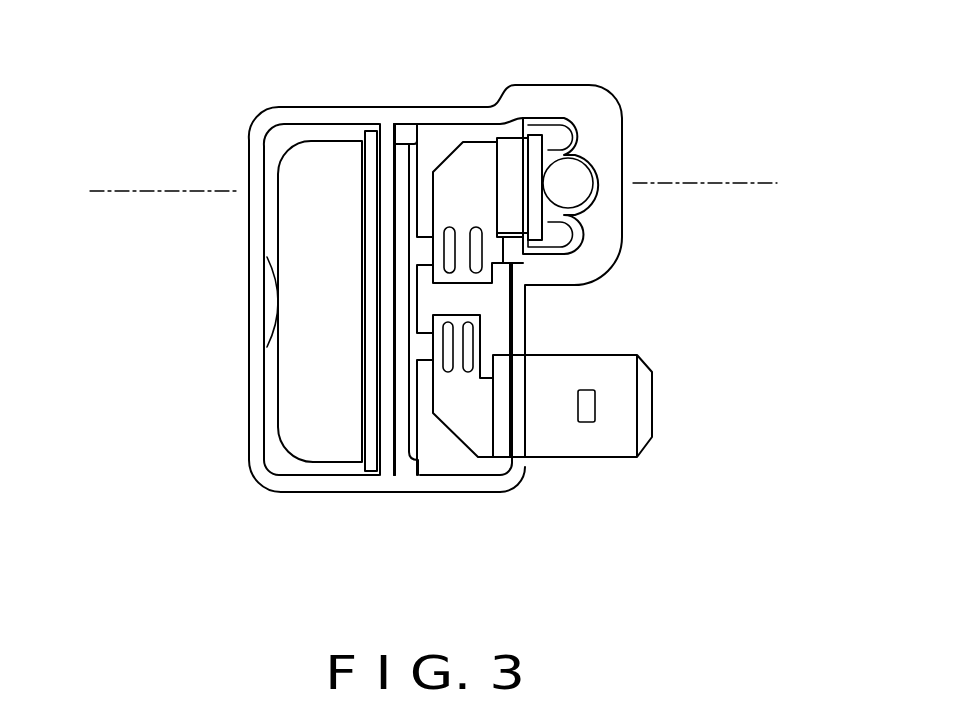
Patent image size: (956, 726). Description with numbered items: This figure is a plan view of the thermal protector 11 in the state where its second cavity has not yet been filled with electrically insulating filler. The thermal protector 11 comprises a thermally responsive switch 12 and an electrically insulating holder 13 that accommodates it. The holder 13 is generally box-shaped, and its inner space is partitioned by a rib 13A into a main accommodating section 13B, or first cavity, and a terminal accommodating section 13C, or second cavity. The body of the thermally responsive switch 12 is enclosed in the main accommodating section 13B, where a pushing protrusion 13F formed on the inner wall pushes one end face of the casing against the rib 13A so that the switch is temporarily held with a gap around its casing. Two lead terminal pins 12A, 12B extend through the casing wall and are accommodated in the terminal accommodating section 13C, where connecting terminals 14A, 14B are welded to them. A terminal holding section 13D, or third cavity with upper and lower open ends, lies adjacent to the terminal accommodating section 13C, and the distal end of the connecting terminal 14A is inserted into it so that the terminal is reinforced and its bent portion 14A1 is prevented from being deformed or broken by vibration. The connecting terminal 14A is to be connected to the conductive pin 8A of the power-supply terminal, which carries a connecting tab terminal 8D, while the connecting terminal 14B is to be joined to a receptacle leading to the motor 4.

The thermal protector 11 is at (257, 91).
The thermally responsive switch 12 is at (318, 381).
The lead terminal pin 12A is at (426, 242).
The lead terminal pin 12B is at (493, 343).
The holder 13 is at (258, 173).
The rib 13A is at (412, 470).
The main accommodating section 13B is at (288, 461).
The terminal accommodating section 13C is at (447, 458).
The terminal holding section 13D is at (602, 122).
The pushing protrusion 13F is at (266, 304).
The connecting terminal 14A is at (596, 168).
The bent portion 14A1 is at (508, 185).
The connecting terminal 14B is at (588, 440).
The conductive pin 8A is at (550, 202).
The connecting tab terminal 8D is at (585, 233).
The motor 4 is at (108, 196).